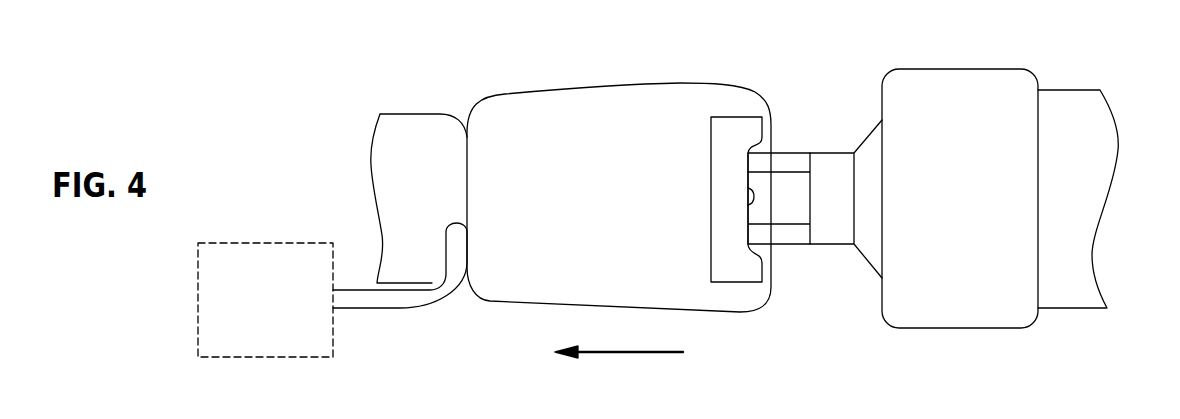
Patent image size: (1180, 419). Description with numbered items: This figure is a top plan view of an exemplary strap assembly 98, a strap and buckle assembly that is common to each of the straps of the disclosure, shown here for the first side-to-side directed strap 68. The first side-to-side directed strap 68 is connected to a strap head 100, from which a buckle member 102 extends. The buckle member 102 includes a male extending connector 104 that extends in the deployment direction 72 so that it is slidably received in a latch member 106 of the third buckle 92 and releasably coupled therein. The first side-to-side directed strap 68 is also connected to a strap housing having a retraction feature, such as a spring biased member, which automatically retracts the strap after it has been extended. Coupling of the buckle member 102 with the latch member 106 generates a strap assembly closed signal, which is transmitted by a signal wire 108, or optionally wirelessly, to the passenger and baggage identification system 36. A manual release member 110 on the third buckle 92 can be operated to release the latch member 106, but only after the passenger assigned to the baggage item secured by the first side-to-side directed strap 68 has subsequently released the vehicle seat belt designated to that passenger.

The passenger and baggage identification system 36 is at (279, 315).
The first side-to-side directed strap 68 is at (1072, 207).
The deployment direction 72 is at (618, 352).
The third buckle 92 is at (607, 118).
The strap assembly 98 is at (860, 48).
The strap head 100 is at (962, 307).
The buckle member 102 is at (830, 225).
The male extending connector 104 is at (789, 162).
The latch member 106 is at (746, 203).
The signal wire 108 is at (382, 309).
The manual release member 110 is at (733, 123).